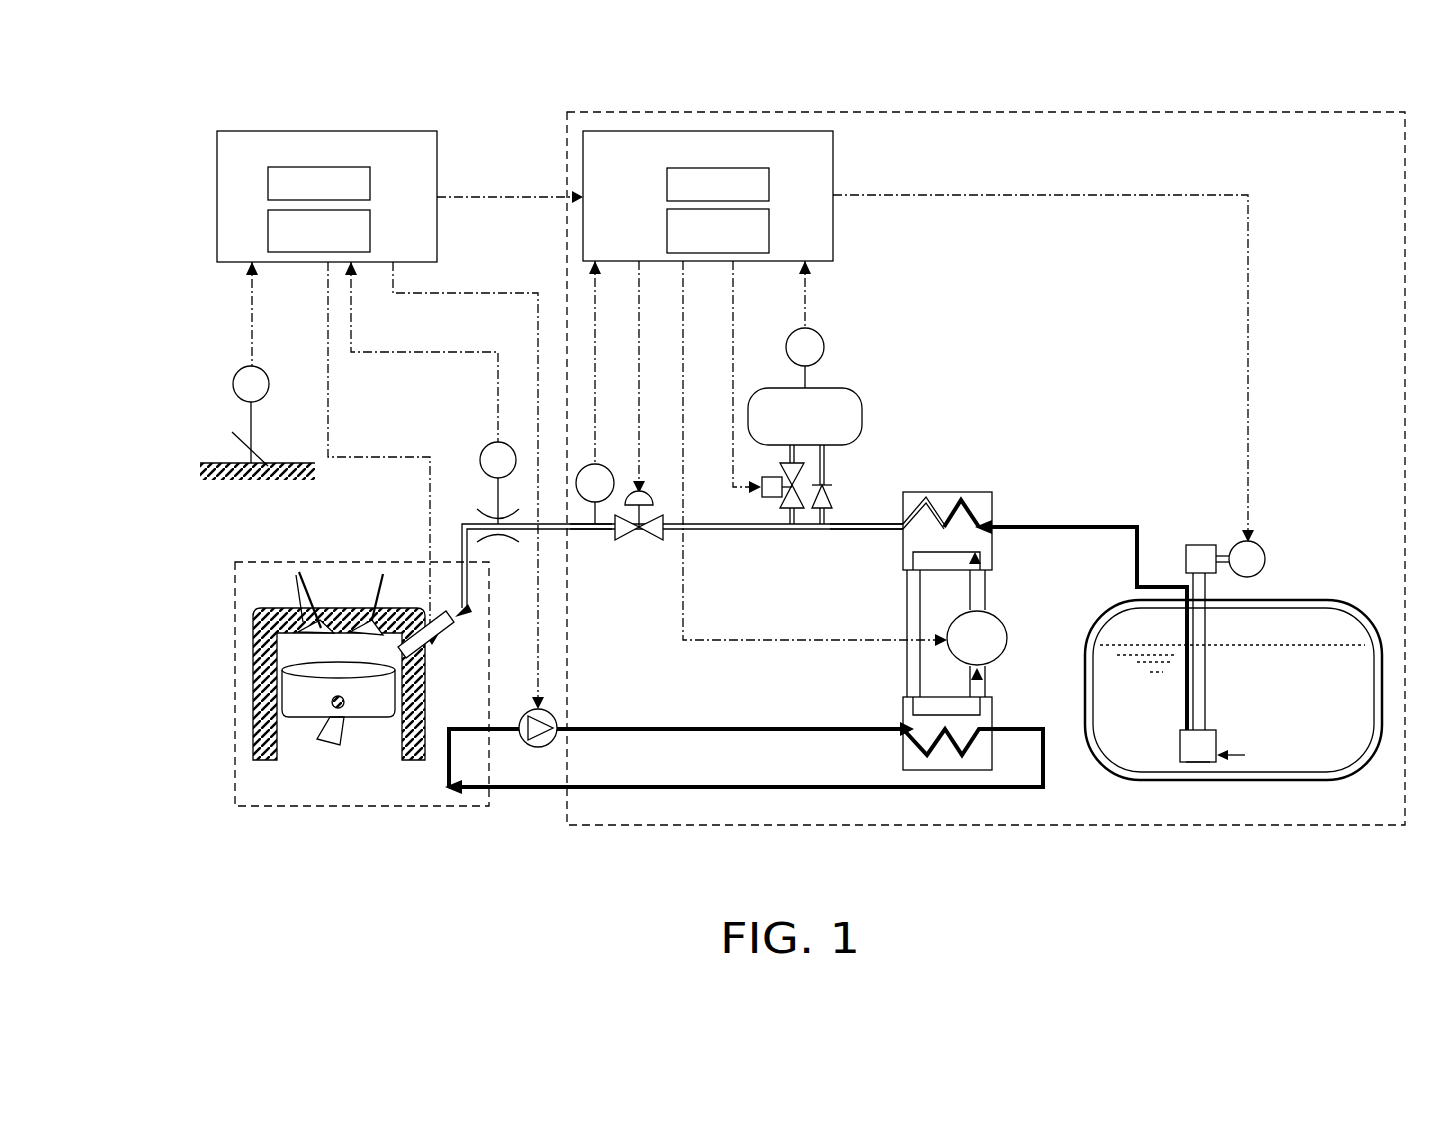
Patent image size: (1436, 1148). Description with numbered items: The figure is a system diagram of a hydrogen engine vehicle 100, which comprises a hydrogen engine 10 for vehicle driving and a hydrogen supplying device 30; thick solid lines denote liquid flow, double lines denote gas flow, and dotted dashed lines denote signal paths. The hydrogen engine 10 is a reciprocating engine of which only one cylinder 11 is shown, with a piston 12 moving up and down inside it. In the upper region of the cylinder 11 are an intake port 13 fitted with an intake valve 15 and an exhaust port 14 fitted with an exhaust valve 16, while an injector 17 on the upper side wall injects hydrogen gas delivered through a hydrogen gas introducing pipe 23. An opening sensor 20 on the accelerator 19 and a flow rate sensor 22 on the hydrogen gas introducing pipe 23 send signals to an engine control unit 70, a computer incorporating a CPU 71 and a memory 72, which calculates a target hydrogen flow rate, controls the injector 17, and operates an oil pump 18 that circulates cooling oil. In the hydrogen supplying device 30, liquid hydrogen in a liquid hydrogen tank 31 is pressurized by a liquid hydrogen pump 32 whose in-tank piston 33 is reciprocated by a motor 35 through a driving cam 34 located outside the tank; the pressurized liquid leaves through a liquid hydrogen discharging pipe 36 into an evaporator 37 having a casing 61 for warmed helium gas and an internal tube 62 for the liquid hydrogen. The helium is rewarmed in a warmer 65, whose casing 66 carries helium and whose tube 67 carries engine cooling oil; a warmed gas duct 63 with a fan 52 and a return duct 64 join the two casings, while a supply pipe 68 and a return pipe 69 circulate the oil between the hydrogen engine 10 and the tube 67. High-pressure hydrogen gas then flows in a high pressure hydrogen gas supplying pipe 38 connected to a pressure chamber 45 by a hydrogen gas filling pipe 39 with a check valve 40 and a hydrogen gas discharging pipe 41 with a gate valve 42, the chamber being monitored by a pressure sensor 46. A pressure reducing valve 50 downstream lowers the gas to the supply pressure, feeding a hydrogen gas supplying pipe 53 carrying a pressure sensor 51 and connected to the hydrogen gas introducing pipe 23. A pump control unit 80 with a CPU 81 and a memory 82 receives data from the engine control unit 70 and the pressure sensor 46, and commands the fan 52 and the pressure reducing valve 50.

The hydrogen engine vehicle 100 is at (236, 96).
The hydrogen engine 10 is at (325, 682).
The cylinder 11 is at (267, 760).
The piston 12 is at (310, 718).
The intake port 13 is at (397, 612).
The exhaust port 14 is at (296, 575).
The intake valve 15 is at (358, 612).
The exhaust valve 16 is at (330, 612).
The injector 17 is at (434, 655).
The oil pump 18 is at (541, 748).
The accelerator 19 is at (233, 440).
The opening sensor 20 is at (233, 384).
The flow rate sensor 22 is at (487, 446).
The hydrogen gas introducing pipe 23 is at (525, 531).
The hydrogen supplying device 30 is at (958, 112).
The liquid hydrogen tank 31 is at (1280, 781).
The liquid hydrogen pump 32 is at (1205, 766).
The in-tank piston 33 is at (1192, 763).
The driving cam 34 is at (1198, 545).
The motor 35 is at (1258, 544).
The liquid hydrogen discharging pipe 36 is at (1070, 521).
The evaporator 37 is at (960, 655).
The high pressure hydrogen gas supplying pipe 38 is at (873, 531).
The hydrogen gas filling pipe 39 is at (826, 477).
The check valve 40 is at (830, 498).
The hydrogen gas discharging pipe 41 is at (790, 522).
The gate valve 42 is at (781, 508).
The pressure chamber 45 is at (852, 392).
The pressure sensor 46 is at (820, 333).
The pressure reducing valve 50 is at (625, 537).
The pressure sensor 51 is at (603, 467).
The fan 52 is at (1007, 630).
The hydrogen gas supplying pipe 53 is at (583, 531).
The casing 61 is at (970, 492).
The tube 62 is at (970, 512).
The warmed gas duct 63 is at (986, 597).
The return duct 64 is at (905, 655).
The warmer 65 is at (996, 784).
The casing 66 is at (993, 770).
The tube 67 is at (965, 755).
The supply pipe 68 is at (688, 732).
The return pipe 69 is at (771, 790).
The engine control unit 70 is at (359, 166).
The CPU 71 is at (370, 183).
The memory 72 is at (370, 222).
The pump control unit 80 is at (742, 167).
The CPU 81 is at (770, 184).
The memory 82 is at (770, 222).